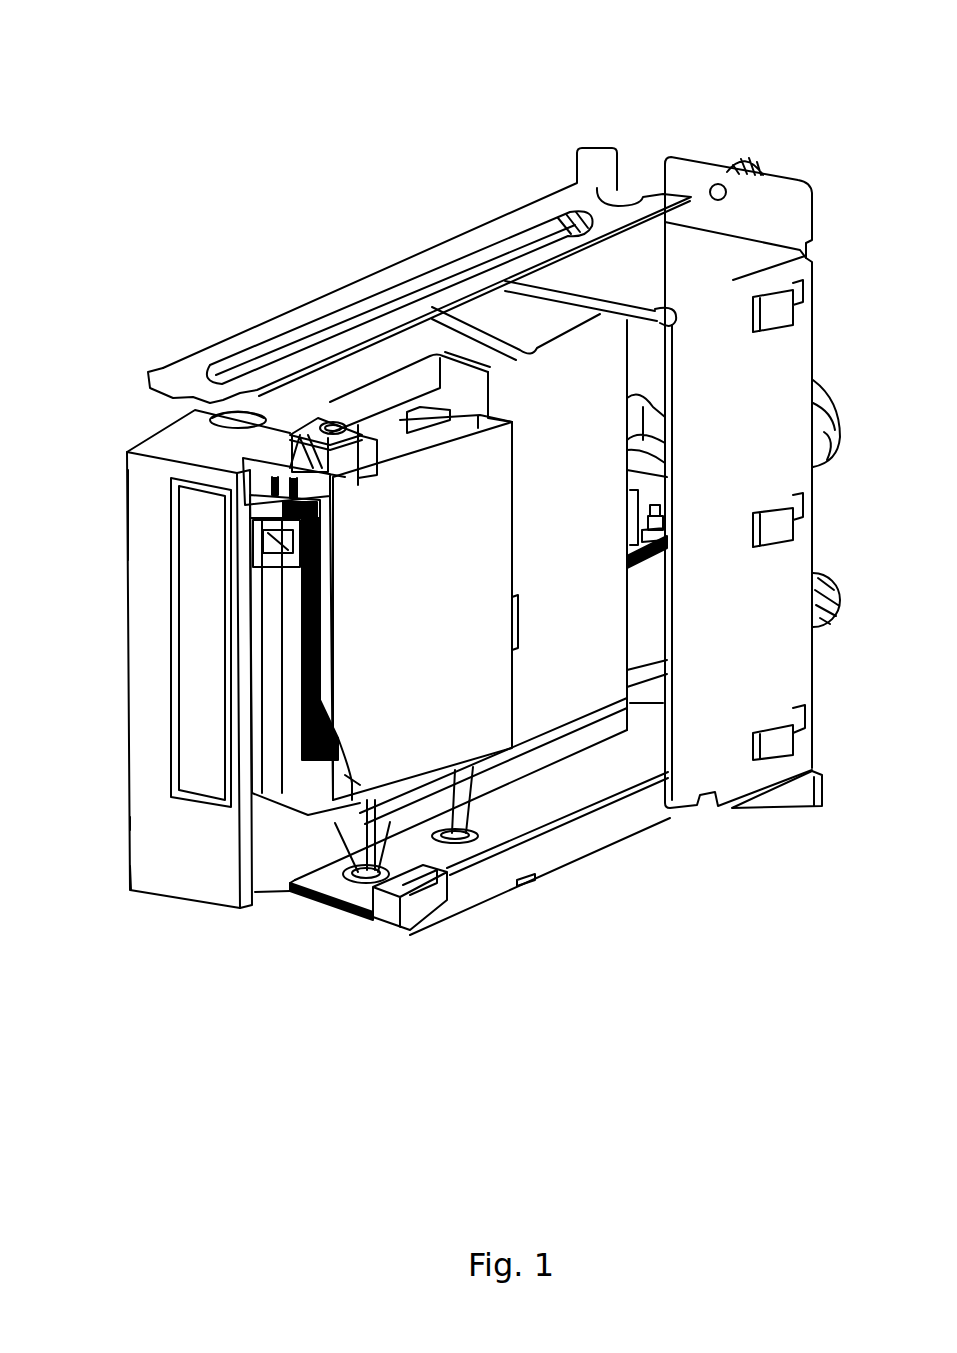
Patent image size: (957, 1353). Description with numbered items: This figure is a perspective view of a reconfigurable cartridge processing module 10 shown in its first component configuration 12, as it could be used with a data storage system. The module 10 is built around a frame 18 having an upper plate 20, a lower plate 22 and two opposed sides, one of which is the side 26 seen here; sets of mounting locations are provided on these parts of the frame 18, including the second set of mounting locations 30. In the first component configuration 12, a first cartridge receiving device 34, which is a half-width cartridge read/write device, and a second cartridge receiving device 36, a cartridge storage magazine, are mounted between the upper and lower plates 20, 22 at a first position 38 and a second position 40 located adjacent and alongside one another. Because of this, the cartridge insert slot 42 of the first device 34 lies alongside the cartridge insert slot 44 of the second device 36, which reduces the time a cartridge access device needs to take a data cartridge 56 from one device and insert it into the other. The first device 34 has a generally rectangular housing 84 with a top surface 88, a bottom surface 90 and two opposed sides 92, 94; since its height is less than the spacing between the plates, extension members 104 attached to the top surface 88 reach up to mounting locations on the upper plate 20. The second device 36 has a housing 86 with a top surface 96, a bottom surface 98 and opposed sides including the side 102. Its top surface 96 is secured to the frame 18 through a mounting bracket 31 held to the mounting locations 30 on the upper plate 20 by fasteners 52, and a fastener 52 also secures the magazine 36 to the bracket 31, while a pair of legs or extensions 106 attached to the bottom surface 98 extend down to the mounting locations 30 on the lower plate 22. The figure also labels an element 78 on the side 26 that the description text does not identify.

The reconfigurable cartridge processing module 10 is at (174, 68).
The first component configuration 12 is at (98, 492).
The frame 18 is at (497, 204).
The upper plate 20 is at (348, 290).
The lower plate 22 is at (585, 802).
The side 26 is at (742, 450).
The second set of mounting locations 30 is at (450, 868).
The mounting bracket 31 is at (530, 354).
The first cartridge receiving device 34 is at (125, 647).
The second cartridge receiving device 36 is at (518, 556).
The first position 38 is at (133, 817).
The second position 40 is at (514, 700).
The cartridge insert slot 42 is at (133, 766).
The cartridge insert slot 44 is at (352, 782).
The fasteners 52 is at (490, 381).
The data cartridge 56 is at (327, 610).
The thumb screw / bumper 78 is at (813, 382).
The housing 84 is at (125, 533).
The housing 86 is at (547, 495).
The top surface 88 is at (231, 466).
The bottom surface 90 is at (300, 900).
The side 92 is at (133, 866).
The side 94 is at (623, 626).
The top surface 96 is at (478, 427).
The bottom surface 98 is at (432, 797).
The side 102 is at (482, 646).
The extension members 104 is at (212, 416).
The extensions 106 is at (500, 768).